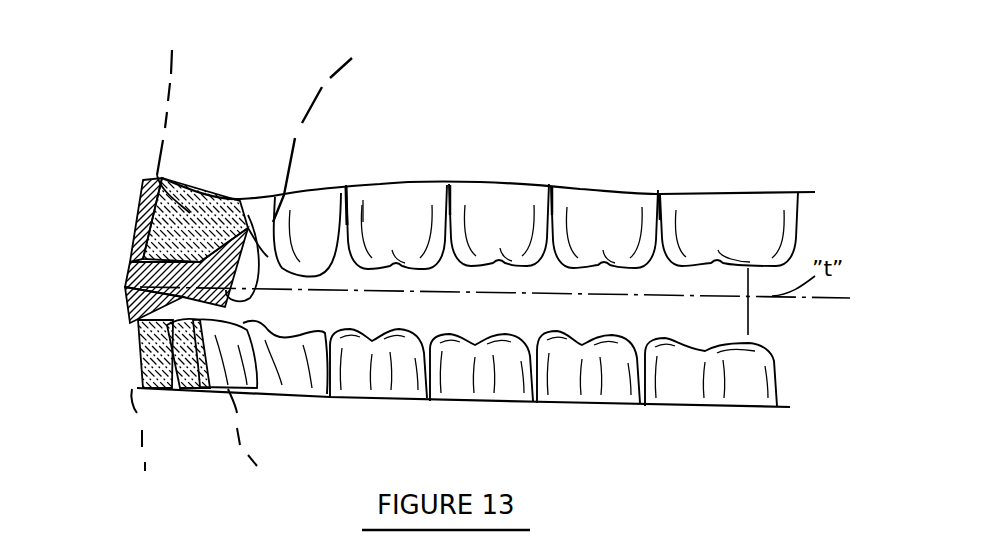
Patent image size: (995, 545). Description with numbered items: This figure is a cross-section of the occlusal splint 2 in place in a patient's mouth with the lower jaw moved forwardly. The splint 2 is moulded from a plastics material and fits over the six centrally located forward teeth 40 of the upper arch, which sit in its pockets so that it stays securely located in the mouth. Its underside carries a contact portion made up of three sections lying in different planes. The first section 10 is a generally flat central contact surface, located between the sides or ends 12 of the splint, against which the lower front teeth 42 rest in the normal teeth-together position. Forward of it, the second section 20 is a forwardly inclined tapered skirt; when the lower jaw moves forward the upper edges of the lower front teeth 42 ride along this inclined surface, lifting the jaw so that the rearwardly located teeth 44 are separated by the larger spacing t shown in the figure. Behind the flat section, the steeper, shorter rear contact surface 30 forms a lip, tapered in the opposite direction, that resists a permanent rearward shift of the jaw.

The occlusal splint 2 is at (199, 193).
The first section 10 is at (257, 389).
The sides or ends 12 is at (188, 389).
The second section 20 is at (127, 285).
The rear contact surface 30 is at (268, 257).
The forward teeth of the upper arch 40 is at (190, 213).
The lower front teeth 42 is at (138, 360).
The rearwardly located teeth 44 is at (793, 223).